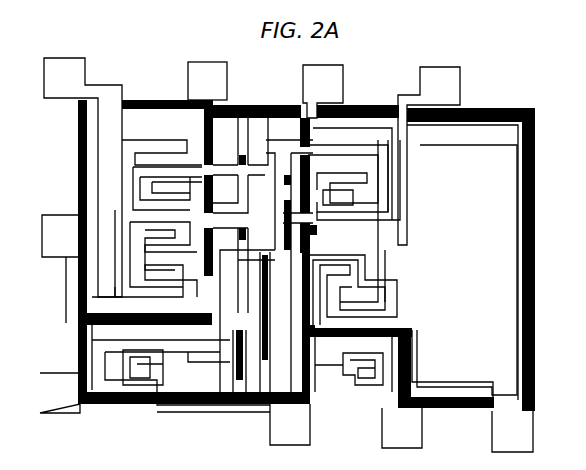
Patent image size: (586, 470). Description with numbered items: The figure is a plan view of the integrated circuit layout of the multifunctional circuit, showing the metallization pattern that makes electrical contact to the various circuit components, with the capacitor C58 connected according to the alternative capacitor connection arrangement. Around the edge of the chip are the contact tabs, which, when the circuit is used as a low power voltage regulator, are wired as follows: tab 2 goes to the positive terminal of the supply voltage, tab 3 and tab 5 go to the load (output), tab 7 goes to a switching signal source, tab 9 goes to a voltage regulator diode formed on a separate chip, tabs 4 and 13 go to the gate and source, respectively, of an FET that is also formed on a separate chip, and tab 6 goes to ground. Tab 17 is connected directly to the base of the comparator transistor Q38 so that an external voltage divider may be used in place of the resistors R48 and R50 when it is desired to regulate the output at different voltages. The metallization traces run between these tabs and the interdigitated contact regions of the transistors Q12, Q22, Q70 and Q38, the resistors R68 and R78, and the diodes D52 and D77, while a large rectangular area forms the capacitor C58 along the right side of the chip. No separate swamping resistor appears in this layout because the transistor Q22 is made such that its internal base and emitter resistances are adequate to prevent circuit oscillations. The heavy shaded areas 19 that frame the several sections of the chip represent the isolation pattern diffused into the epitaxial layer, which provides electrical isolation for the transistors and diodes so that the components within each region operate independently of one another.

The contact tab 2 is at (83, 177).
The contact tab 3 is at (61, 269).
The contact tab 4 is at (207, 81).
The contact tab 5 is at (60, 393).
The contact tab 6 is at (429, 156).
The contact tab 7 is at (290, 424).
The contact tab 9 is at (402, 428).
The contact tab 13 is at (323, 91).
The contact tab 17 is at (512, 431).
The isolation pattern 19 is at (490, 110).
The transistor Q12 is at (153, 183).
The transistor Q22 is at (157, 251).
The comparator transistor Q38 is at (352, 268).
The transistor Q70 is at (347, 193).
The resistor R48 is at (236, 372).
The resistor R50 is at (264, 345).
The resistor R68 is at (244, 158).
The resistor R78 is at (310, 232).
The capacitor C58 is at (496, 213).
The diode D52 is at (368, 367).
The diode D77 is at (152, 366).